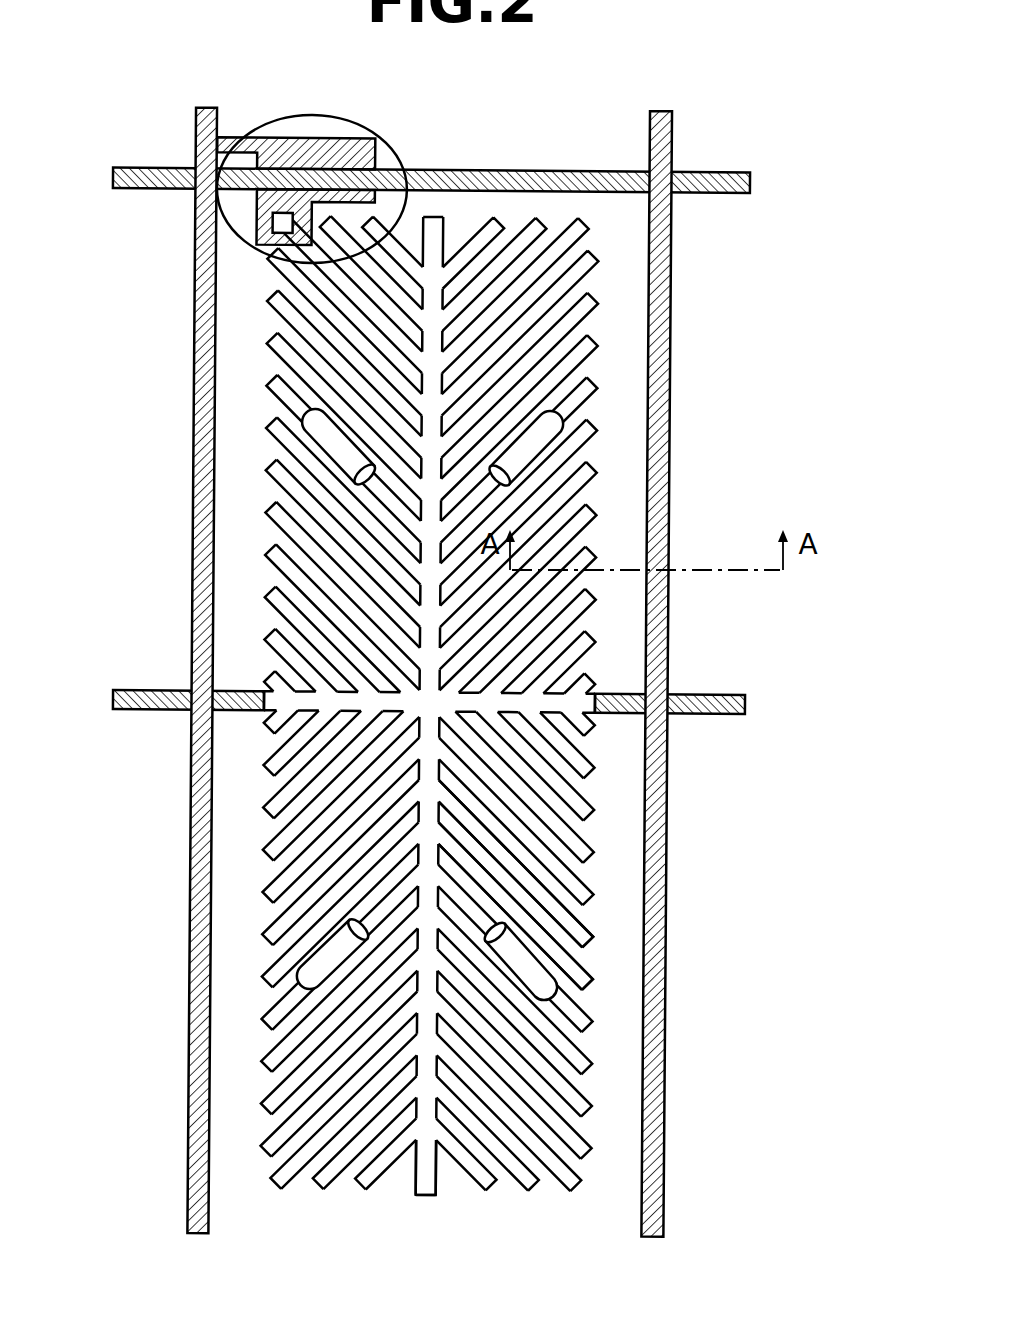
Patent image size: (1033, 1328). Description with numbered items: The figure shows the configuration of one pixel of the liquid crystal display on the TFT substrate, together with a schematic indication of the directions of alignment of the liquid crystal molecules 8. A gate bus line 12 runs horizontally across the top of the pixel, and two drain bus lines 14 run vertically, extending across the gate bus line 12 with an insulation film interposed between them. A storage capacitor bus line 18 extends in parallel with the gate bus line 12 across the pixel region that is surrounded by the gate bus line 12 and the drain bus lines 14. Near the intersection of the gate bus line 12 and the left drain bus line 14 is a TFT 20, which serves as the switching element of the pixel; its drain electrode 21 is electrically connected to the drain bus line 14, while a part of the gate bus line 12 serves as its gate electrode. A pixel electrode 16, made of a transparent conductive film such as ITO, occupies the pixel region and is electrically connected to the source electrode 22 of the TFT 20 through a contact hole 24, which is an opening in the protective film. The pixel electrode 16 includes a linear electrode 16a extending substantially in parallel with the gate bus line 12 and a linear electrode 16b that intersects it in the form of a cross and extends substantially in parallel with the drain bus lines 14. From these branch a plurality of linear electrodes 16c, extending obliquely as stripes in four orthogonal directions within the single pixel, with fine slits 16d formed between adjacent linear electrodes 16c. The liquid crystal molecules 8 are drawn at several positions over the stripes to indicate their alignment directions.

The liquid crystal molecules 8 is at (327, 433).
The gate bus line 12 is at (728, 172).
The drain bus line 14 is at (213, 1225).
The pixel electrode 16 is at (428, 743).
The linear electrode 16a is at (272, 705).
The linear electrode 16b is at (428, 1197).
The linear electrodes 16c is at (575, 985).
The fine slits 16d is at (575, 935).
The storage capacitor bus line 18 is at (748, 705).
The TFT 20 is at (338, 130).
The drain electrode 21 is at (300, 147).
The source electrode 22 is at (262, 203).
The contact hole 24 is at (282, 223).